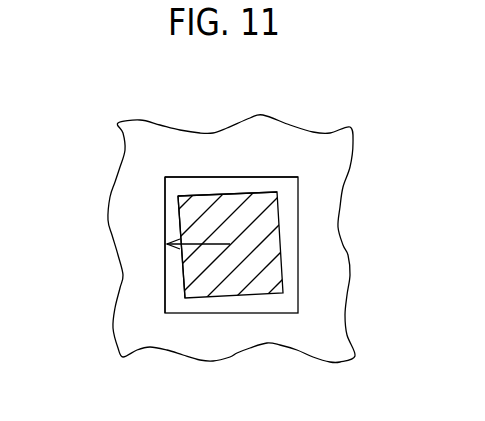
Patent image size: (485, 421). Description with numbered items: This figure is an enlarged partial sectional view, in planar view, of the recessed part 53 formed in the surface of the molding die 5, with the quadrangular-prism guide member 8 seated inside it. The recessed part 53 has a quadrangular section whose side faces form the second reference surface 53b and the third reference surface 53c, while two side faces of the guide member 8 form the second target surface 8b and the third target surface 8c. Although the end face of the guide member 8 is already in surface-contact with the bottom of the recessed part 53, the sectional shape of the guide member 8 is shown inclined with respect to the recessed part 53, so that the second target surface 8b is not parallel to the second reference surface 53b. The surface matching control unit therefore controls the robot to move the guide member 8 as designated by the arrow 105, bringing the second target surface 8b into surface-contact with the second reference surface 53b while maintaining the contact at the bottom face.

The molding die 5 is at (325, 332).
The recessed part 53 is at (300, 198).
The second reference surface 53b is at (165, 187).
The third reference surface 53c is at (180, 177).
The guide member 8 is at (270, 270).
The second target surface 8b is at (183, 283).
The third target surface 8c is at (235, 192).
The arrow 105 is at (185, 243).